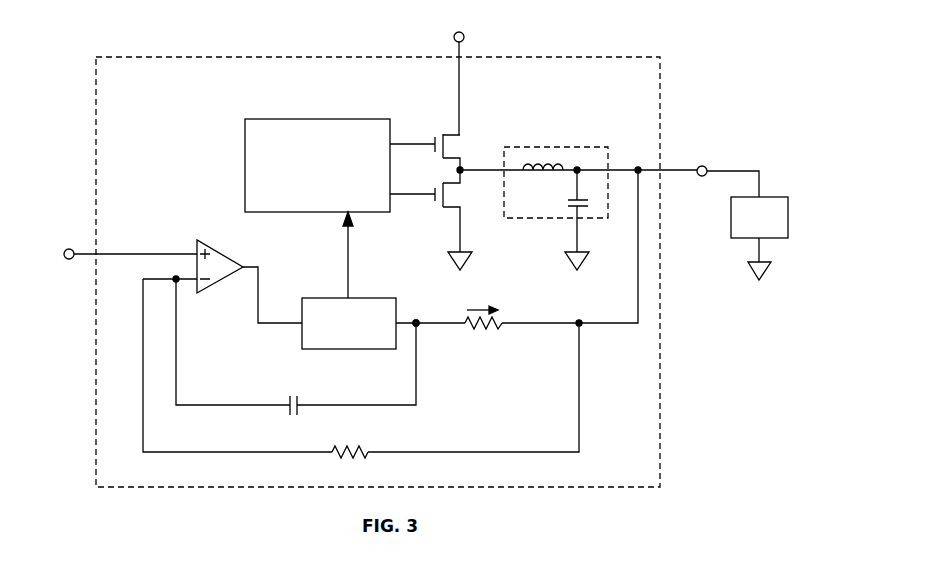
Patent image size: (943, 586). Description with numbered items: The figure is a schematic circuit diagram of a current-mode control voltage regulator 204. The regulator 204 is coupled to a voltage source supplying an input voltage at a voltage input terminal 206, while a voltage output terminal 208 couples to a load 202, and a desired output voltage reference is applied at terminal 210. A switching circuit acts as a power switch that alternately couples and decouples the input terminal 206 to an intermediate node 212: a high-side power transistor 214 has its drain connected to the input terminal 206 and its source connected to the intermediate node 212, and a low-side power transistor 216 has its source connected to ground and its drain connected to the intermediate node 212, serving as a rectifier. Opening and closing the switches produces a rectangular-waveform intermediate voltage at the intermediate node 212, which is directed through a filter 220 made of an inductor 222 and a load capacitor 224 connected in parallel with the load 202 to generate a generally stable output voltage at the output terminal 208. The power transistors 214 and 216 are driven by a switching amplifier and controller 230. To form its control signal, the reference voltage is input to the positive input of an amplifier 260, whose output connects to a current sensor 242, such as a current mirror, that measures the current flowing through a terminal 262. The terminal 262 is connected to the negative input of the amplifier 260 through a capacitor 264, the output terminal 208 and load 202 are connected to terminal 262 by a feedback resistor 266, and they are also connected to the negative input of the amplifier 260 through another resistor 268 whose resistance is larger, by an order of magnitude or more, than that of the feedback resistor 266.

The load 202 is at (745, 239).
The voltage regulator 204 is at (600, 58).
The voltage input terminal 206 is at (464, 35).
The voltage output terminal 208 is at (700, 176).
The terminal 210 is at (67, 260).
The intermediate node 212 is at (462, 172).
The high-side power transistor 214 is at (446, 133).
The low-side power transistor 216 is at (446, 208).
The filter 220 is at (596, 146).
The inductor 222 is at (545, 159).
The load capacitor 224 is at (568, 200).
The switching amplifier and controller 230 is at (298, 118).
The current sensor 242 is at (316, 298).
The amplifier 260 is at (223, 249).
The terminal 262 is at (418, 326).
The capacitor 264 is at (285, 412).
The feedback resistor 266 is at (503, 326).
The resistor 268 is at (336, 455).